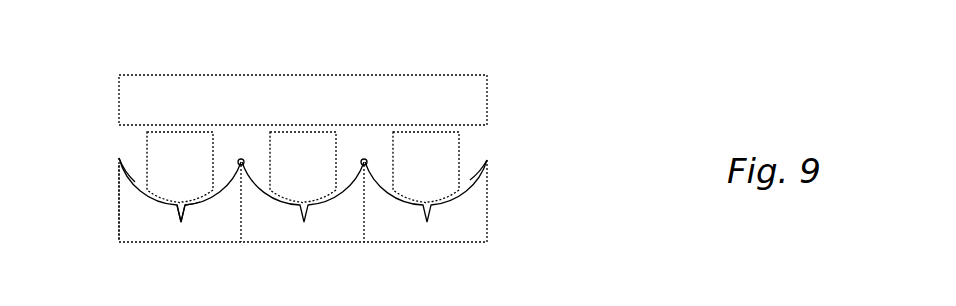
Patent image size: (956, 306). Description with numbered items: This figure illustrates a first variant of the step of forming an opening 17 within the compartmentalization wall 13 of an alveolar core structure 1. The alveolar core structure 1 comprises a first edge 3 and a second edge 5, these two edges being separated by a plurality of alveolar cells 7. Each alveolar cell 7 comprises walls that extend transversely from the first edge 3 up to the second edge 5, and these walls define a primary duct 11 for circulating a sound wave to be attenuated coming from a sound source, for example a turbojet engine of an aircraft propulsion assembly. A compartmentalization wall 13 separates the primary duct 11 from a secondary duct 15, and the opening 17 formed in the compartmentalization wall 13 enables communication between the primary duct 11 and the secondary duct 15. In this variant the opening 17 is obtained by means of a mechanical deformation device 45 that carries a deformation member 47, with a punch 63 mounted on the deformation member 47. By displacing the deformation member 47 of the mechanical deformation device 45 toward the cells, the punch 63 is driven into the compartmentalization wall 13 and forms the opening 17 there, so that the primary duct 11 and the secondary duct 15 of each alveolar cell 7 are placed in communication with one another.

The alveolar core structure 1 is at (512, 170).
The first edge 3 is at (489, 161).
The second edge 5 is at (488, 243).
The alveolar cell 7 is at (488, 206).
The primary duct 11 is at (118, 208).
The compartmentalization wall 13 is at (222, 170).
The secondary duct 15 is at (118, 174).
The opening 17 is at (192, 210).
The mechanical deformation device 45 is at (190, 125).
The deformation member 47 is at (160, 131).
The punch 63 is at (172, 223).